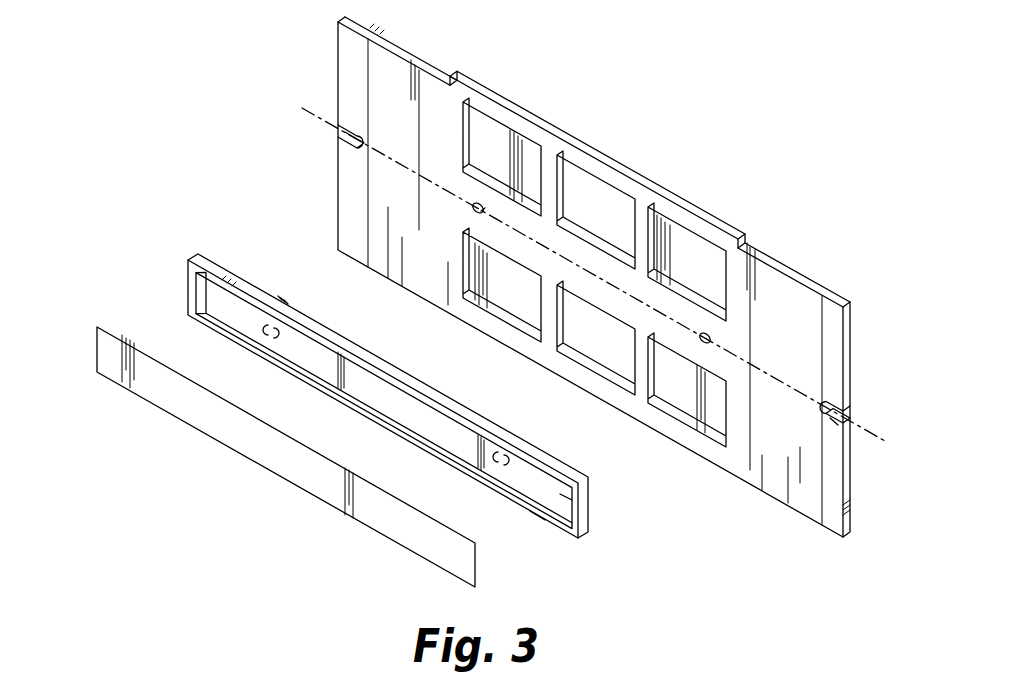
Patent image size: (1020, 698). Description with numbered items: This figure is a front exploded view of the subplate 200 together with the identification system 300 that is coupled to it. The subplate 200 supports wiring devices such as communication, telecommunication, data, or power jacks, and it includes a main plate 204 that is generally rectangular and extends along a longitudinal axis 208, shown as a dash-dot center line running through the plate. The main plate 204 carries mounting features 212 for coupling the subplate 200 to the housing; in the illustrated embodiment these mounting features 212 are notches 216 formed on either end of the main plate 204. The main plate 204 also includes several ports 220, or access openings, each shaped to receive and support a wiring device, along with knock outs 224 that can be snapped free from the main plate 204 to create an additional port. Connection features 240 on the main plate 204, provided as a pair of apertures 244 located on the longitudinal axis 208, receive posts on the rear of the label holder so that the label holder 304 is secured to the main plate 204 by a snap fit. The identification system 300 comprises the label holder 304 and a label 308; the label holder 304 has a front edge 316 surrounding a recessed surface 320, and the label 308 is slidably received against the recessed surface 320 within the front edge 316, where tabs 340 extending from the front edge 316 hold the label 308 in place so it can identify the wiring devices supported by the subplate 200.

The subplate 200 is at (595, 277).
The main plate 204 is at (790, 292).
The longitudinal axis 208 is at (302, 107).
The mounting features 212 is at (837, 430).
The notches 216 is at (848, 412).
The ports 220 is at (598, 193).
The knock outs 224 is at (487, 128).
The connection features 240 is at (478, 203).
The apertures 244 is at (473, 213).
The identification system 300 is at (340, 367).
The label holder 304 is at (192, 258).
The label 308 is at (97, 350).
The front edge 316 is at (272, 312).
The recessed surface 320 is at (560, 500).
The tabs 340 is at (537, 515).